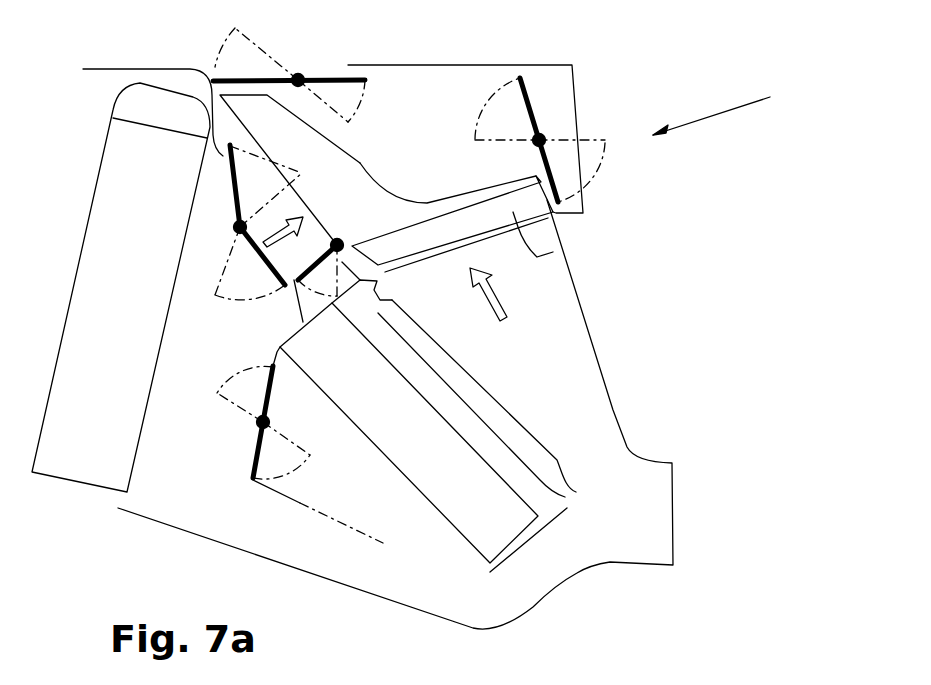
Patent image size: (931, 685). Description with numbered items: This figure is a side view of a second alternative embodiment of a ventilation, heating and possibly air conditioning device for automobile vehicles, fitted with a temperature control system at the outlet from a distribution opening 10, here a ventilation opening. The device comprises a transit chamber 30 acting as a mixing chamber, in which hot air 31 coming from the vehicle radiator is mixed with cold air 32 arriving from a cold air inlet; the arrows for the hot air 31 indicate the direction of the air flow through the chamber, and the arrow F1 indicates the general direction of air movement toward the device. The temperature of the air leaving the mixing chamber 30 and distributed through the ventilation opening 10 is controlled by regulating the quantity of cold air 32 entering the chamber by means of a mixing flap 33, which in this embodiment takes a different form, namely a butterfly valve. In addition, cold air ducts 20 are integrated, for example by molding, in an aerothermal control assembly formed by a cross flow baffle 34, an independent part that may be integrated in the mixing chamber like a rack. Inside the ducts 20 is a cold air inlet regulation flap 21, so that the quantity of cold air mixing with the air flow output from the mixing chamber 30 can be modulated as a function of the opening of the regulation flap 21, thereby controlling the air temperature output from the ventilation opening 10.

The distribution opening 10 is at (557, 110).
The cold air ducts 20 is at (558, 252).
The cold air inlet regulation flap 21 is at (310, 287).
The transit chamber 30 is at (448, 107).
The hot air 31 is at (497, 307).
The cold air 32 is at (257, 262).
The mixing flap 33 is at (225, 172).
The cross flow baffle 34 is at (358, 177).
The force direction F1 is at (713, 101).